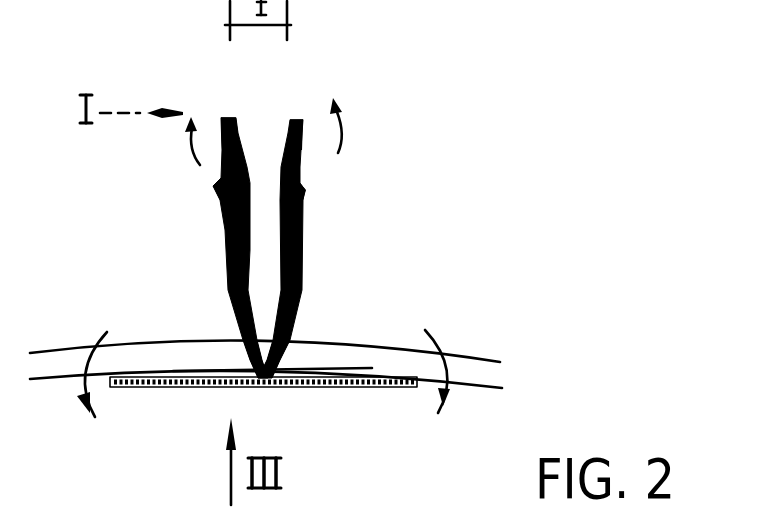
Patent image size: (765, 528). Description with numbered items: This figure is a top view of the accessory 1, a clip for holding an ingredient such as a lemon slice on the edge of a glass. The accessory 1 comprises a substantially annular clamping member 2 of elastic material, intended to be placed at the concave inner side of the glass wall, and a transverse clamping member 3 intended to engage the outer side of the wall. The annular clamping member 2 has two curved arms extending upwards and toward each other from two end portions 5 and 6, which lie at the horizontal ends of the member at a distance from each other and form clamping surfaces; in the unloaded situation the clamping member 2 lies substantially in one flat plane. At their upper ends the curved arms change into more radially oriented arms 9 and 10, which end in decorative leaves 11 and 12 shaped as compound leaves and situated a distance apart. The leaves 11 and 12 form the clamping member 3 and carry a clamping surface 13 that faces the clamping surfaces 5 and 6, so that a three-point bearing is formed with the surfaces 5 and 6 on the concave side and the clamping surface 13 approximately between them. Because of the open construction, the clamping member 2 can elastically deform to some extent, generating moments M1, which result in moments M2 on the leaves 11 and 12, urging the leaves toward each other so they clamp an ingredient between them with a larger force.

The accessory 1 is at (152, 210).
The clamping member 2 is at (490, 403).
The clamping member 3 is at (362, 209).
The end portion 5 is at (167, 375).
The end portion 6 is at (380, 370).
The arm 9 is at (250, 355).
The arm 10 is at (270, 363).
The leaf 11 is at (222, 132).
The leaf 12 is at (302, 157).
The clamping surface 13 is at (226, 292).
The moments M1 is at (259, 355).
The moments M2 is at (269, 150).